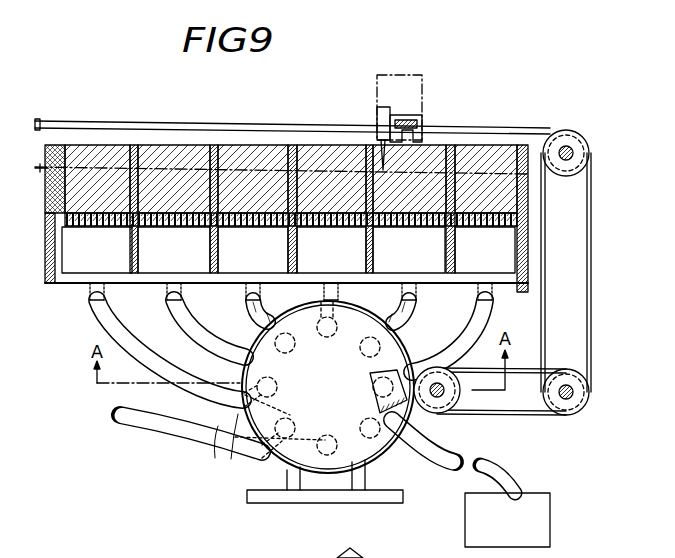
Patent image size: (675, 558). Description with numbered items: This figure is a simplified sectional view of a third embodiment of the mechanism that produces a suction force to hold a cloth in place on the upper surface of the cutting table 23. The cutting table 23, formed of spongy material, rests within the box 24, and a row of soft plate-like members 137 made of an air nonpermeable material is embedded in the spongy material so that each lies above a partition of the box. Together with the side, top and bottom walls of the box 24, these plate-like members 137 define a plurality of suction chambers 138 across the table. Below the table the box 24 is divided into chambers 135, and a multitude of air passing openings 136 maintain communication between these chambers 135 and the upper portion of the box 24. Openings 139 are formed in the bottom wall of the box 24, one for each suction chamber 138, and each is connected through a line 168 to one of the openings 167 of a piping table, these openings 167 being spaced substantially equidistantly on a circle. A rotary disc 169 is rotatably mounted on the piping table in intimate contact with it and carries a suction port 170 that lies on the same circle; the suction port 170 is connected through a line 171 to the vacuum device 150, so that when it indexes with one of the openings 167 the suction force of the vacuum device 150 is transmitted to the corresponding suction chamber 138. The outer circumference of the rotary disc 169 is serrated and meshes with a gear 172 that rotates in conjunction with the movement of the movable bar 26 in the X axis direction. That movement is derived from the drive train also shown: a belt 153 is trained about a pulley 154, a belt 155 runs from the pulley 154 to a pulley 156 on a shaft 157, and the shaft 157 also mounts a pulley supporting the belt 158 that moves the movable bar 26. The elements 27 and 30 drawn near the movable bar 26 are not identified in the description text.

The belt 158 is at (62, 126).
The suction chamber 138 is at (95, 145).
The soft plate-like member 137 is at (134, 146).
The cutting table 23 is at (256, 160).
The solenoid 27 is at (396, 118).
The movable bar 26 is at (395, 130).
The control unit 30 is at (390, 75).
The box 24 is at (522, 147).
The shaft 157 is at (567, 148).
The pulley 156 is at (578, 170).
The belt 155 is at (591, 254).
The air passing openings 136 is at (103, 227).
The chambers 135 is at (114, 268).
The openings 139 is at (104, 297).
The line 168 is at (104, 327).
The openings 167 is at (380, 350).
The suction port 170 is at (385, 402).
The rotary disc 169 is at (372, 456).
The gear 172 is at (433, 411).
The belt 153 is at (490, 414).
The pulley 154 is at (564, 416).
The line 171 is at (503, 473).
The vacuum device 150 is at (465, 542).